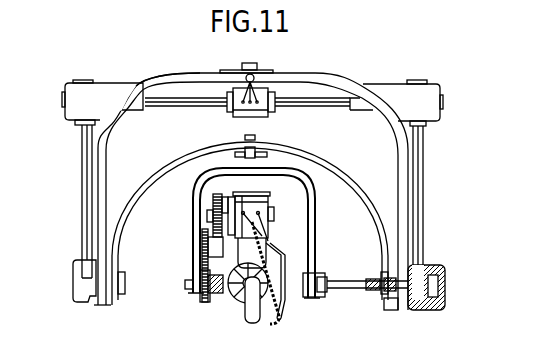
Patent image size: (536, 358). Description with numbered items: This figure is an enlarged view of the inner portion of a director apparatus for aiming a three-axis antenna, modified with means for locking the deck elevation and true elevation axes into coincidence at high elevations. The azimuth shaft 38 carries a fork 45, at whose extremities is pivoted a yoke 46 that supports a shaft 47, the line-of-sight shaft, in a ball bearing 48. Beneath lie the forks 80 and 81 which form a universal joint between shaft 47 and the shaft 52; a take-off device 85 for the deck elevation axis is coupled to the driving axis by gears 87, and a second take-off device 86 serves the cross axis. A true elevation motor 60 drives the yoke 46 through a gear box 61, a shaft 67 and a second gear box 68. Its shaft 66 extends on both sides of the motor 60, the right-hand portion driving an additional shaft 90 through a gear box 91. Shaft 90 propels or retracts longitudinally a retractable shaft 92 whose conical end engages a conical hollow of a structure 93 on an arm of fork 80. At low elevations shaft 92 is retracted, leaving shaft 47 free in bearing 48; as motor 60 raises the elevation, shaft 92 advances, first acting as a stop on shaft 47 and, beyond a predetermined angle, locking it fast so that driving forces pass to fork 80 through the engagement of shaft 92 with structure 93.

The shaft 38 is at (258, 66).
The fork 45 is at (99, 158).
The yoke 46 is at (176, 166).
The shaft 47 is at (257, 140).
The ball bearing 48 is at (245, 140).
The shaft 52 is at (252, 325).
The true elevation motor 60 is at (275, 116).
The gear box 61 is at (66, 84).
The shaft 66 is at (212, 108).
The shaft 67 is at (86, 193).
The second gear box 68 is at (80, 271).
The fork 80 is at (314, 250).
The fork 81 is at (283, 255).
The take-off device 85 is at (271, 206).
The take-off device 86 is at (238, 300).
The gears 87 is at (201, 268).
The shaft 90 is at (420, 198).
The gear box 91 is at (441, 90).
The retractable shaft 92 is at (373, 292).
The structure 93 is at (320, 299).